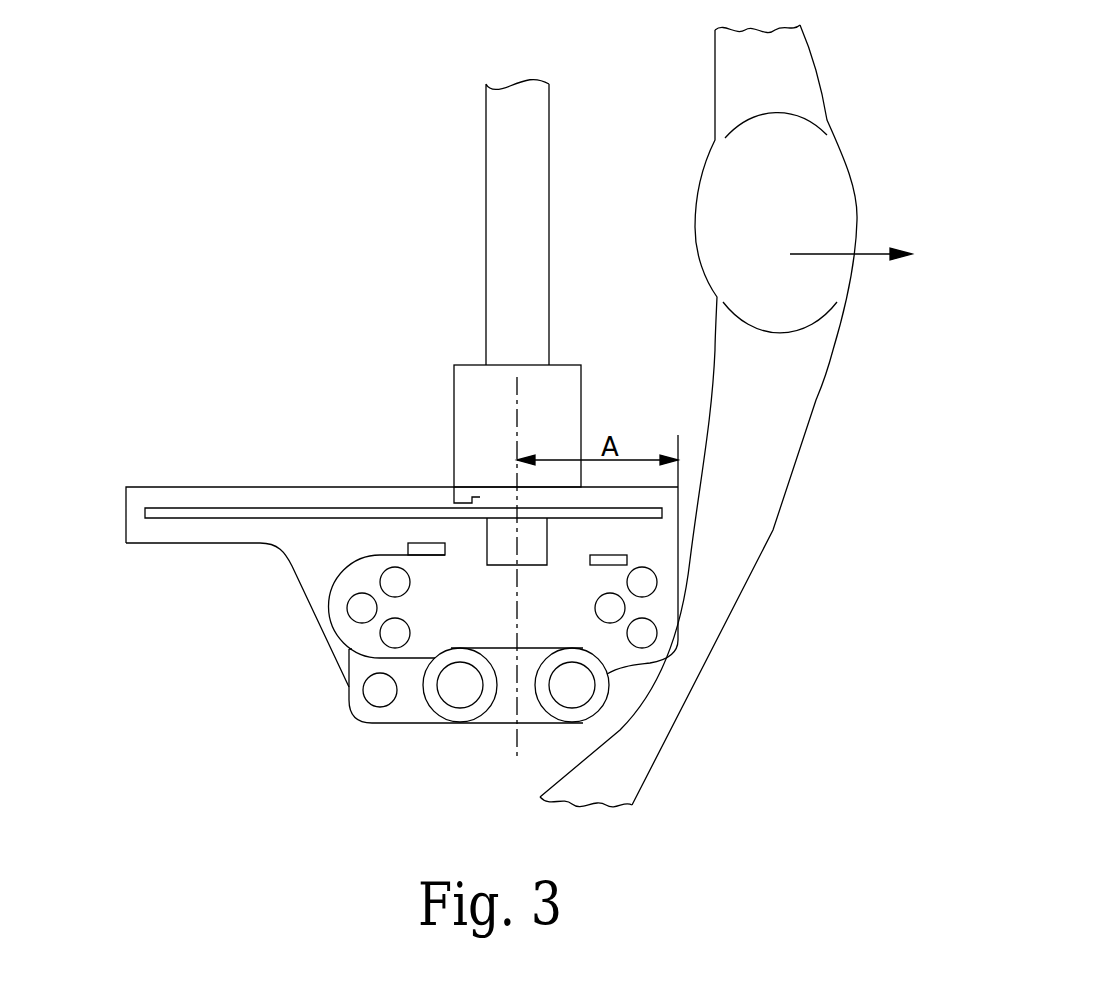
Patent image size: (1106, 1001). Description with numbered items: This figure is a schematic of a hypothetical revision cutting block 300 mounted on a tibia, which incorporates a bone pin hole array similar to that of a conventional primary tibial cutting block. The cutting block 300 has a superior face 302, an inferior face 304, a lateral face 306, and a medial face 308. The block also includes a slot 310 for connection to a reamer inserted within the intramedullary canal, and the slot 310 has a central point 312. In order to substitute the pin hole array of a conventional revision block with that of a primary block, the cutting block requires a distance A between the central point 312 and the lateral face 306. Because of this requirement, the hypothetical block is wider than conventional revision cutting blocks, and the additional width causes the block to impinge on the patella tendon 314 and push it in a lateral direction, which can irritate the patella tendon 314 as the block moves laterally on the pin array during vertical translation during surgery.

The revision cutting block 300 is at (186, 450).
The superior face 302 is at (143, 487).
The inferior face 304 is at (356, 711).
The lateral face 306 is at (678, 582).
The medial face 308 is at (126, 532).
The slot 310 is at (503, 565).
The central point 312 is at (515, 408).
The patella tendon 314 is at (762, 461).